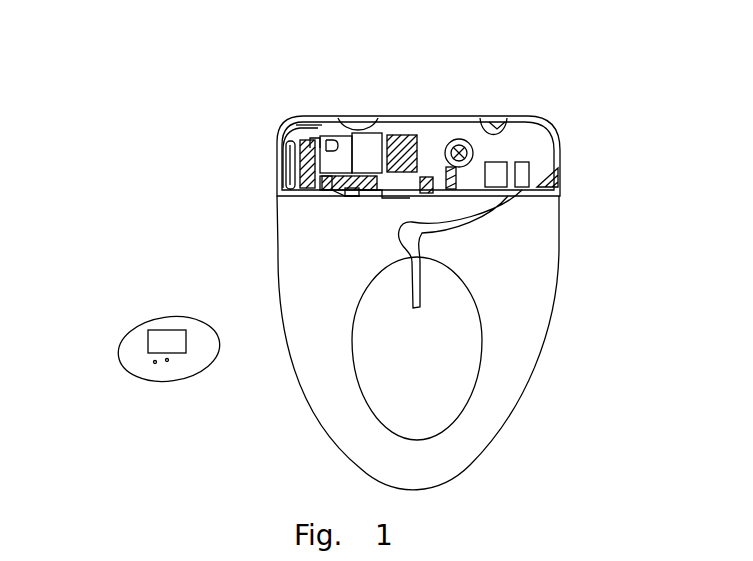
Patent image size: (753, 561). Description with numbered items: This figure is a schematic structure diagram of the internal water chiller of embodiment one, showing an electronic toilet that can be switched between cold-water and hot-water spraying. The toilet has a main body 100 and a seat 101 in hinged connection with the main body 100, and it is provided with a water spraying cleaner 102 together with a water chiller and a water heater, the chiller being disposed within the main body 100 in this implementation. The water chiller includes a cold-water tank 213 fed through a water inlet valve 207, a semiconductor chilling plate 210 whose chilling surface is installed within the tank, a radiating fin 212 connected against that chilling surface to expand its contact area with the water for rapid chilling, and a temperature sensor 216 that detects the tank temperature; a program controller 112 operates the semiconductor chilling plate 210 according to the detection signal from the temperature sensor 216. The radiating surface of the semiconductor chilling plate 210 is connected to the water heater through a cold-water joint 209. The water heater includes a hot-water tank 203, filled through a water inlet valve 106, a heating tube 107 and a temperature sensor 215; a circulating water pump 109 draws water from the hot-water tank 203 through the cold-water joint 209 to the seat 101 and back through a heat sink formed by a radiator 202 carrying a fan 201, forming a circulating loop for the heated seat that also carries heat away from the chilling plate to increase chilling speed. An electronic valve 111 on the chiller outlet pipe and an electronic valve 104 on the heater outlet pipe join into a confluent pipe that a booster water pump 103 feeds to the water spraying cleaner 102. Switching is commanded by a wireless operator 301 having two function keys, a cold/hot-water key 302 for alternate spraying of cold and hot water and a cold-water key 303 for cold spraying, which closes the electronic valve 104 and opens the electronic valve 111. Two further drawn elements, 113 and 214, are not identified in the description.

The main body 100 is at (560, 180).
The seat 101 is at (508, 408).
The water spraying cleaner 102 is at (418, 298).
The booster water pump 103 is at (523, 162).
The electronic valve 104 is at (500, 118).
The water inlet valve 106 is at (362, 197).
The heating tube 107 is at (323, 130).
The circulating water pump 109 is at (369, 128).
The electronic valve 111 is at (490, 120).
The controller 112 is at (562, 178).
The cover recess 113 is at (465, 125).
The fan 201 is at (280, 150).
The radiator 202 is at (286, 130).
The hot-water tank 203 is at (300, 164).
The water inlet valve 207 is at (330, 200).
The cold-water joint 209 is at (300, 173).
The semiconductor chilling plate 210 is at (343, 192).
The radiating fin 212 is at (352, 196).
The cold-water tank 213 is at (403, 130).
The inlet 214 is at (335, 185).
The temperature sensor 215 is at (300, 125).
The temperature sensor 216 is at (427, 125).
The wireless operator 301 is at (153, 335).
The cold/hot-water key 302 is at (148, 364).
The cold-water key 303 is at (143, 364).